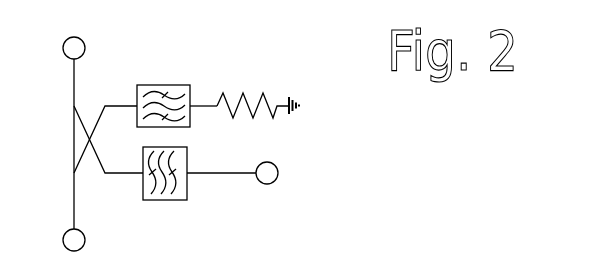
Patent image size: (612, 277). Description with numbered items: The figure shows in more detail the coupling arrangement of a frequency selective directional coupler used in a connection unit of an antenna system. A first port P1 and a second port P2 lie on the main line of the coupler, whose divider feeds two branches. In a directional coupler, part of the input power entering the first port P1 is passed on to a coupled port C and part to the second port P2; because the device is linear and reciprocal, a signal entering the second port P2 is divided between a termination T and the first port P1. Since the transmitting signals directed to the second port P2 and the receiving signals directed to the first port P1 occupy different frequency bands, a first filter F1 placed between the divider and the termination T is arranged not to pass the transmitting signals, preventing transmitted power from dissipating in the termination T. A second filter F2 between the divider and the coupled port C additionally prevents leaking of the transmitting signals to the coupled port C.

The first port P1 is at (75, 33).
The second port P2 is at (75, 253).
The first filter F1 is at (163, 91).
The second filter F2 is at (165, 187).
The termination T is at (258, 105).
The coupled port C is at (241, 174).